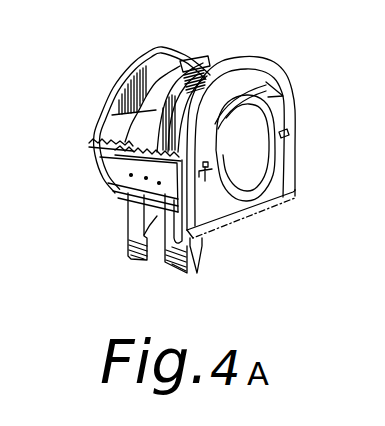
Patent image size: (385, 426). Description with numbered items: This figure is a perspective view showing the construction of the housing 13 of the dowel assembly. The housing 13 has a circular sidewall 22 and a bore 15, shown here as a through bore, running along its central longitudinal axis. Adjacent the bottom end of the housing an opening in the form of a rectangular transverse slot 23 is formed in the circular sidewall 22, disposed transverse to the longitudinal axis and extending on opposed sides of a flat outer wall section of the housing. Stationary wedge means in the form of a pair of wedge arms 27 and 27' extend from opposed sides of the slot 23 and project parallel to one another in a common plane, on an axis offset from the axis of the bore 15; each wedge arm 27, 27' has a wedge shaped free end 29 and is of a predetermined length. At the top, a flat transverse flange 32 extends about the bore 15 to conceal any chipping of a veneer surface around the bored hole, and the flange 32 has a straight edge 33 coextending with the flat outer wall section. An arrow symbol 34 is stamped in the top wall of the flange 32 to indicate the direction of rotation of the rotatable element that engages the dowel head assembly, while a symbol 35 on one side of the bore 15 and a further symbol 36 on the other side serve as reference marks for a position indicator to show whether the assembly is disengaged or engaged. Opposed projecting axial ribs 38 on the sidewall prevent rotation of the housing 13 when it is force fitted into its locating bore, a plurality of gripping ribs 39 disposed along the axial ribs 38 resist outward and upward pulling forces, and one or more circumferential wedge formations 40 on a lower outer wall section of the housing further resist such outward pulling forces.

The housing 13 is at (300, 64).
The bore 15 is at (259, 113).
The circular sidewall 22 is at (160, 185).
The rectangular transverse slot 23 is at (131, 193).
The wedge arm 27 is at (230, 274).
The wedge arm 27' is at (134, 254).
The wedge shaped free end 29 is at (172, 266).
The flat transverse flange 32 is at (281, 180).
The straight edge 33 is at (268, 206).
The arrow symbol 34 is at (243, 89).
The symbol 35 is at (207, 172).
The symbol 36 is at (290, 136).
The axial ribs 38 is at (97, 162).
The gripping ribs 39 is at (103, 139).
The circumferential wedge formations 40 is at (133, 67).